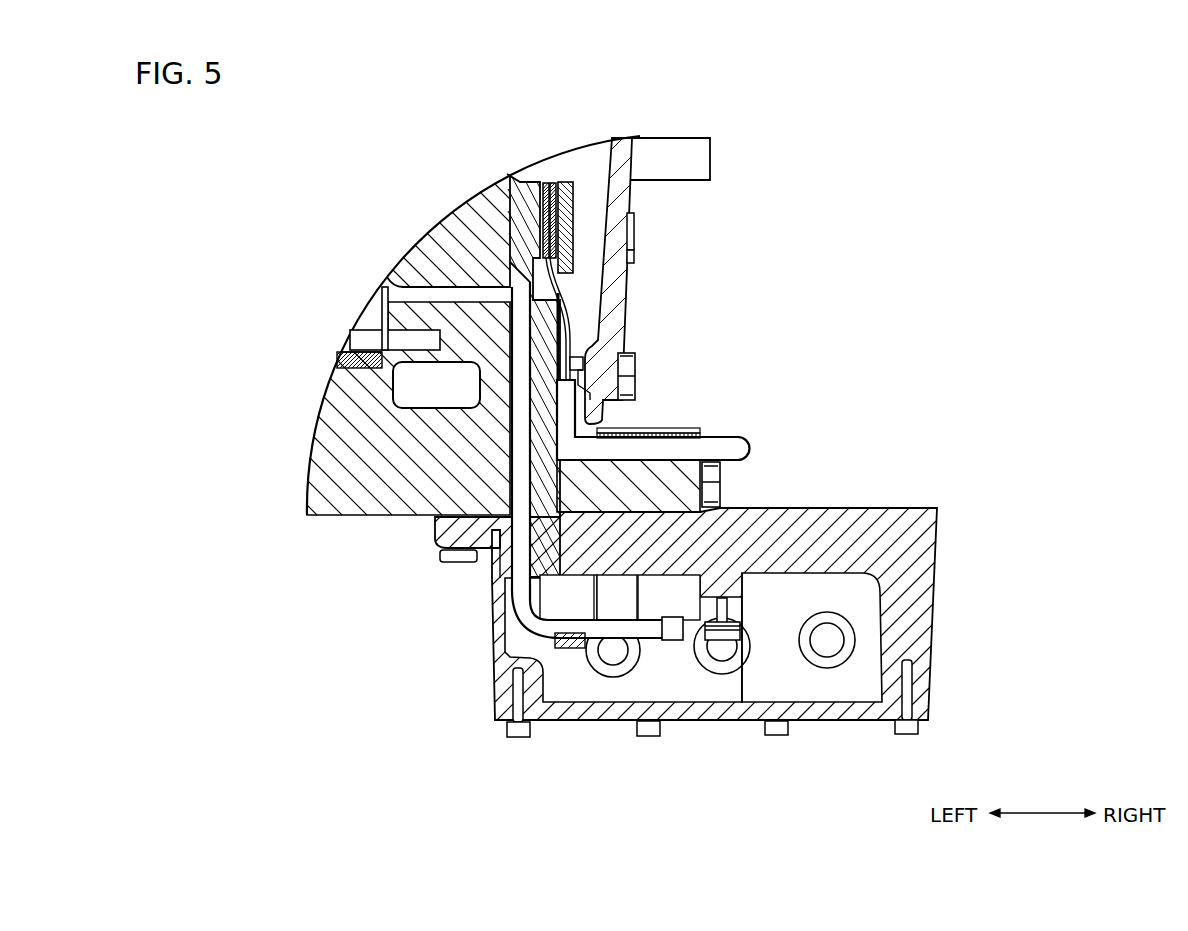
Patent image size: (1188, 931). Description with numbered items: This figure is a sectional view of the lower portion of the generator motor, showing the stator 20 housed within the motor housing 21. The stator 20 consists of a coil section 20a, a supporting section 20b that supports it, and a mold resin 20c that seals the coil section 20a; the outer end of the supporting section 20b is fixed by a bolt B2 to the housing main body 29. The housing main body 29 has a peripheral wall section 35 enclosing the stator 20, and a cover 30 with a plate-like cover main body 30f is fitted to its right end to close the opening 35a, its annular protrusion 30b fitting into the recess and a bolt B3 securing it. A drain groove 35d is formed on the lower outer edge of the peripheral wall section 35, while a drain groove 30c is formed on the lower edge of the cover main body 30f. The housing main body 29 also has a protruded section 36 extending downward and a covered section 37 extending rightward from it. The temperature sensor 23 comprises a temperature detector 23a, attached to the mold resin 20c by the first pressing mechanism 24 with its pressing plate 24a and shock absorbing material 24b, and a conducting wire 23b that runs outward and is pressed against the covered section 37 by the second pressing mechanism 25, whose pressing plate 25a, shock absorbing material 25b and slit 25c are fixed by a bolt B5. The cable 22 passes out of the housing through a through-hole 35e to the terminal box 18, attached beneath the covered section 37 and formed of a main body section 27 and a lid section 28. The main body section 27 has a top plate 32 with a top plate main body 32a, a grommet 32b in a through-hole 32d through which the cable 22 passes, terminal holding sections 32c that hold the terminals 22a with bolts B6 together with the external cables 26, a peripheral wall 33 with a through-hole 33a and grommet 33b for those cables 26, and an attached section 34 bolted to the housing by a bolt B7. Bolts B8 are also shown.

The terminal box 18 is at (682, 642).
The stator 20 is at (447, 347).
The coil section 20a is at (443, 230).
The supporting section 20b is at (372, 320).
The mold resin 20c is at (489, 355).
The motor housing 21 is at (433, 347).
The cable 22 is at (475, 461).
The terminal 22a is at (675, 625).
The temperature sensor 23 is at (654, 252).
The temperature detector 23a is at (634, 235).
The conducting wire 23b is at (566, 292).
The first pressing mechanism 24 is at (543, 162).
The pressing plate 24a is at (565, 182).
The shock absorbing material 24b is at (546, 183).
The second pressing mechanism 25 is at (686, 410).
The pressing plate 25a is at (637, 428).
The shock absorbing material 25b is at (655, 432).
The slit 25c is at (712, 430).
The cable 26 is at (615, 652).
The main body section 27 is at (917, 625).
The lid section 28 is at (927, 703).
The housing main body 29 is at (436, 325).
The cover 30 is at (669, 281).
The annular protrusion 30b is at (584, 340).
The drain groove 30c is at (590, 362).
The cover main body 30f is at (640, 168).
The top plate 32 is at (660, 642).
The top plate main body 32a is at (686, 614).
The grommet 32b is at (492, 578).
The terminal holding section 32c is at (612, 592).
The through-hole 32d is at (487, 548).
The peripheral wall 33 is at (442, 627).
The through-hole 33a is at (593, 653).
The grommet 33b is at (642, 650).
The attached section 34 is at (437, 527).
The peripheral wall section 35 is at (436, 325).
The opening 35a is at (599, 170).
The drain groove 35d is at (566, 362).
The through-hole 35e is at (513, 400).
The protruded section 36 is at (323, 490).
The covered section 37 is at (690, 512).
The bolt B2 is at (368, 338).
The bolt B3 is at (636, 378).
The bolt B5 is at (722, 478).
The bolt B6 is at (710, 657).
The bolt B7 is at (443, 553).
The bolt B8 is at (520, 737).